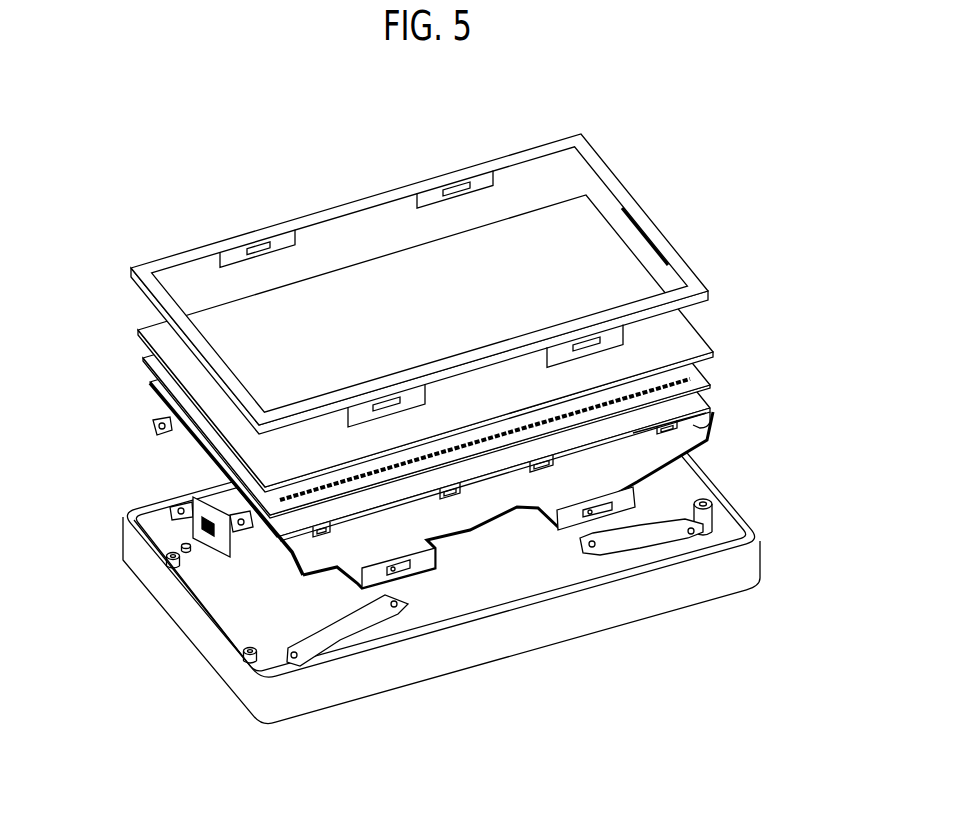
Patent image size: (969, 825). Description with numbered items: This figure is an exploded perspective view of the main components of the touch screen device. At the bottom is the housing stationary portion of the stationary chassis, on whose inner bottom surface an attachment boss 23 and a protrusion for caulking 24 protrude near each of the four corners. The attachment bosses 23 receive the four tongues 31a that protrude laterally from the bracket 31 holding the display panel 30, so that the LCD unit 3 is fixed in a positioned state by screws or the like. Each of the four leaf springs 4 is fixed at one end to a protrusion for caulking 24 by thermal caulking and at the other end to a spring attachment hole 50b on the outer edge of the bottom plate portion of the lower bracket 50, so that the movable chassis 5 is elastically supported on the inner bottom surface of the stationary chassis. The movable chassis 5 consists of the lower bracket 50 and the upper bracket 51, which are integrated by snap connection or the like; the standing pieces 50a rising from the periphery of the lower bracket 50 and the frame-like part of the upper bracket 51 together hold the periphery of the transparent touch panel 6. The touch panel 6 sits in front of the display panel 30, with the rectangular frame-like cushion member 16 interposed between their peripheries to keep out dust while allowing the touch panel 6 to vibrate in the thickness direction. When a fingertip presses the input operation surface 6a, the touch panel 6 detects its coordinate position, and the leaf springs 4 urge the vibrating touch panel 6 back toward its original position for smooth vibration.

The LCD unit 3 is at (233, 773).
The leaf spring 4 is at (337, 637).
The movable chassis 5 is at (770, 338).
The touch panel 6 is at (138, 328).
The input operation surface 6a is at (463, 398).
The cushion member 16 is at (143, 358).
The attachment boss 23 is at (708, 520).
The protrusion for caulking 24 is at (185, 546).
The display panel 30 is at (278, 548).
The bracket 31 is at (303, 517).
The tongue 31a is at (147, 422).
The lower bracket 50 is at (650, 472).
The standing piece 50a is at (222, 540).
The spring attachment hole 50b is at (393, 570).
The upper bracket 51 is at (697, 287).